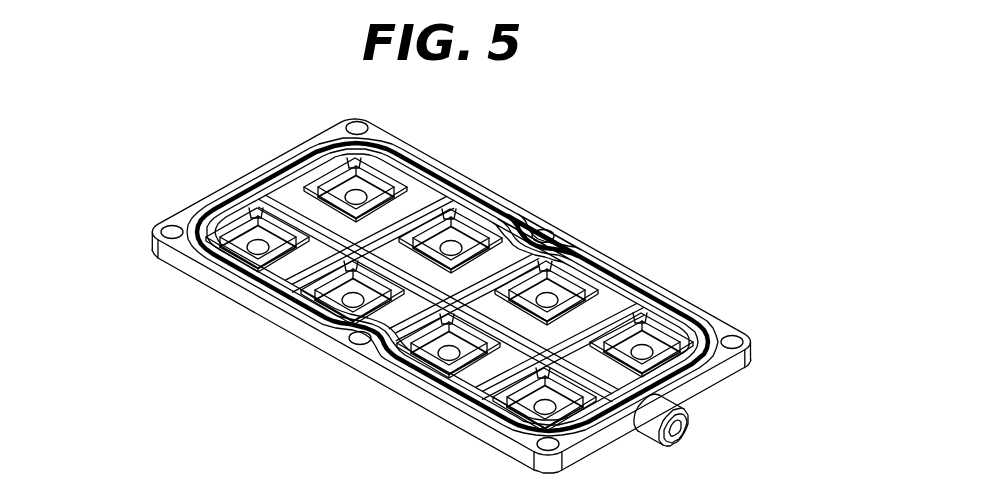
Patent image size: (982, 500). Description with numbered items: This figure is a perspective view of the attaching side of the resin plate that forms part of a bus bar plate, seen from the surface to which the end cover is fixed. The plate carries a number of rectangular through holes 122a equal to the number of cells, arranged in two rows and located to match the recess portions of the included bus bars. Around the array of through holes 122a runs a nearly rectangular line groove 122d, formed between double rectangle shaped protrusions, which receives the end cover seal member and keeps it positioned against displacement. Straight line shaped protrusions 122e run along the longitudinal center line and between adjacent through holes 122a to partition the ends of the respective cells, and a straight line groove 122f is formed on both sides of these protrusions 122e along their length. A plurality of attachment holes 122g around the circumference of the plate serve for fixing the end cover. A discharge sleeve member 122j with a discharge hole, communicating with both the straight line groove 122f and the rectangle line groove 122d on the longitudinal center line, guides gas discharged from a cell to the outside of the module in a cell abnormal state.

The through hole 122a is at (262, 266).
The rectangle line groove 122d is at (652, 277).
The inner rim 122e is at (268, 186).
The straight line groove 122f is at (256, 190).
The attachment hole 122g is at (360, 124).
The discharge sleeve member 122j is at (690, 412).